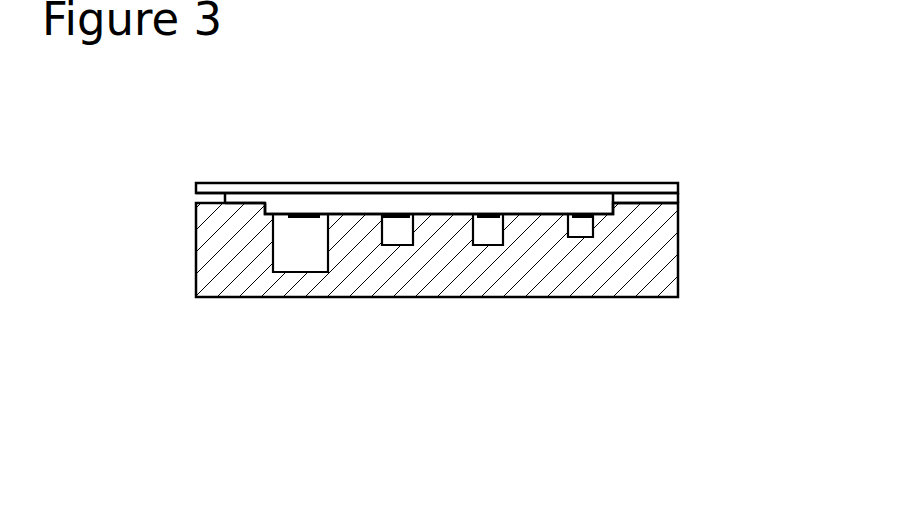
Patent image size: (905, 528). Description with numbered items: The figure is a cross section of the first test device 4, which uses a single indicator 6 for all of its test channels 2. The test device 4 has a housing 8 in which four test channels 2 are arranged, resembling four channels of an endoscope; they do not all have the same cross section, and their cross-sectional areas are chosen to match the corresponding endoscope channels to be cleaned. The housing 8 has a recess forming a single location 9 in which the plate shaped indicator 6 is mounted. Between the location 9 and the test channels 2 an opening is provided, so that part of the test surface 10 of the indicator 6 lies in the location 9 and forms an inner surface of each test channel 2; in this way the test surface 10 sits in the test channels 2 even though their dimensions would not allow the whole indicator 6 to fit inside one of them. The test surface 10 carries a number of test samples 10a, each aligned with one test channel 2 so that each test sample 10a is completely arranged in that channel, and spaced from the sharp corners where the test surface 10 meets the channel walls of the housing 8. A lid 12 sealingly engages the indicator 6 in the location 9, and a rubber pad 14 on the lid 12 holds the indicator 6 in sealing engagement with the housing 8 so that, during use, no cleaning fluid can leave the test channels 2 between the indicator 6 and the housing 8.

The test channel 2 is at (380, 254).
The test device 4 is at (170, 212).
The indicator 6 is at (395, 197).
The housing 8 is at (662, 257).
The location 9 is at (617, 208).
The test surface 10 is at (283, 230).
The test sample 10a is at (299, 231).
The lid 12 is at (663, 181).
The rubber pad 14 is at (654, 198).